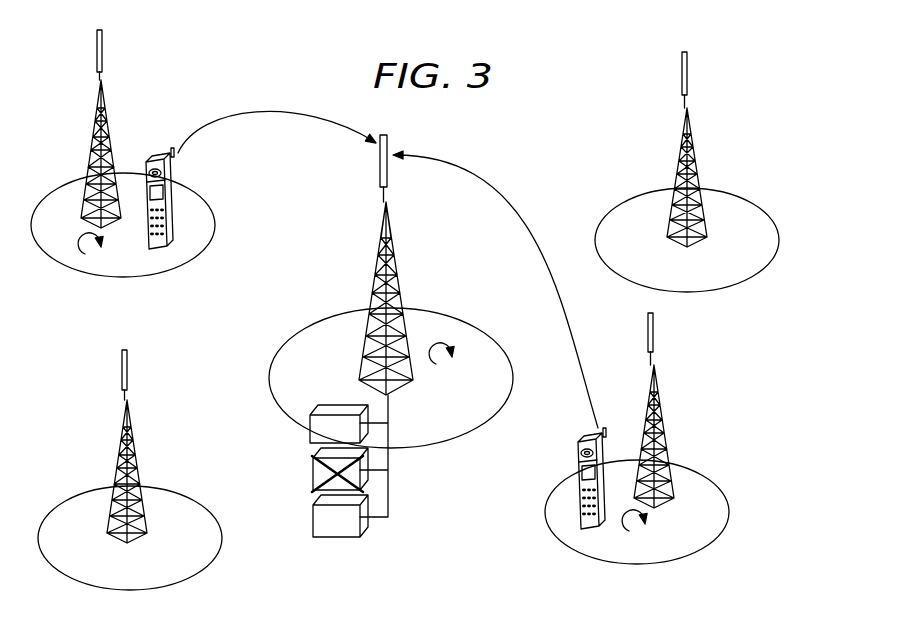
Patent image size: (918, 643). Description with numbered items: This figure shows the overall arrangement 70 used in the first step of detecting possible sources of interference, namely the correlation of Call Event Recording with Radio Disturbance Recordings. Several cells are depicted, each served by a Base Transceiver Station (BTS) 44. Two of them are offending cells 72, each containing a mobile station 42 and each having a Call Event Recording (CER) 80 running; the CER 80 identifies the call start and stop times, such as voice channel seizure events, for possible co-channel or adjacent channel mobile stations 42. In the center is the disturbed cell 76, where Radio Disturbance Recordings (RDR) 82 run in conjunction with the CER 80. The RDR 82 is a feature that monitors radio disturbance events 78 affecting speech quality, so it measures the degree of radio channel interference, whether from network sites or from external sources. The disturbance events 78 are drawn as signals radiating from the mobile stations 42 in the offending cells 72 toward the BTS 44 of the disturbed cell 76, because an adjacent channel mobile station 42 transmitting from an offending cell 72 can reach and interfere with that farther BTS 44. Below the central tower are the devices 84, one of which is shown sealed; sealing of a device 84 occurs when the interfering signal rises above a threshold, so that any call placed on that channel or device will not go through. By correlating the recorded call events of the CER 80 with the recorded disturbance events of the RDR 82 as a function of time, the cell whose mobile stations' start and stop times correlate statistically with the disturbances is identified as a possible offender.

The wireless communication system 70 is at (735, 60).
The mobile station 42 is at (162, 158).
The Base Transceiver Station (BTS) 44 is at (94, 118).
The offending cell 72 is at (52, 205).
The disturbed cell 76 is at (293, 345).
The radio disturbance event 78 is at (226, 97).
The Call Event Recording (CER) 80 is at (108, 273).
The Radio Disturbance Recording (RDR) 82 is at (462, 385).
The sealed device 84 is at (340, 540).